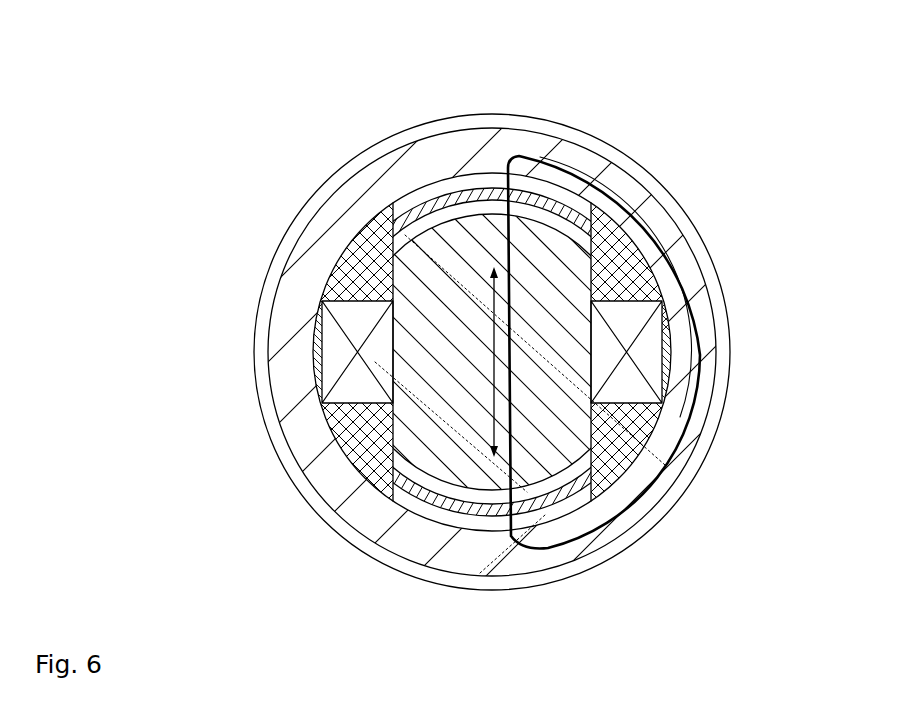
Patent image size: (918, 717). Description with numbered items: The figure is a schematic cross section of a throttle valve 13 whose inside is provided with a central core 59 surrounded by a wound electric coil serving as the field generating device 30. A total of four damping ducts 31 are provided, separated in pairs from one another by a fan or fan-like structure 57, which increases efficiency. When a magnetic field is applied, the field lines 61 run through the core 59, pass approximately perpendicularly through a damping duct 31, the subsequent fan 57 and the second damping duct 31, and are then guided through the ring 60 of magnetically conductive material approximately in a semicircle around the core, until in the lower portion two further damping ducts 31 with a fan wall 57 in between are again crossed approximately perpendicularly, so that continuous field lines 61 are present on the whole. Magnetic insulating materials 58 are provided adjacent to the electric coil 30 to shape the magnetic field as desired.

The throttle valve 13 is at (256, 312).
The field generating device 30 is at (650, 354).
The damping duct 31 is at (440, 212).
The fan 57 is at (488, 187).
The magnetic insulating material 58 is at (352, 282).
The central core 59 is at (553, 252).
The ring 60 is at (612, 190).
The field lines 61 is at (487, 297).